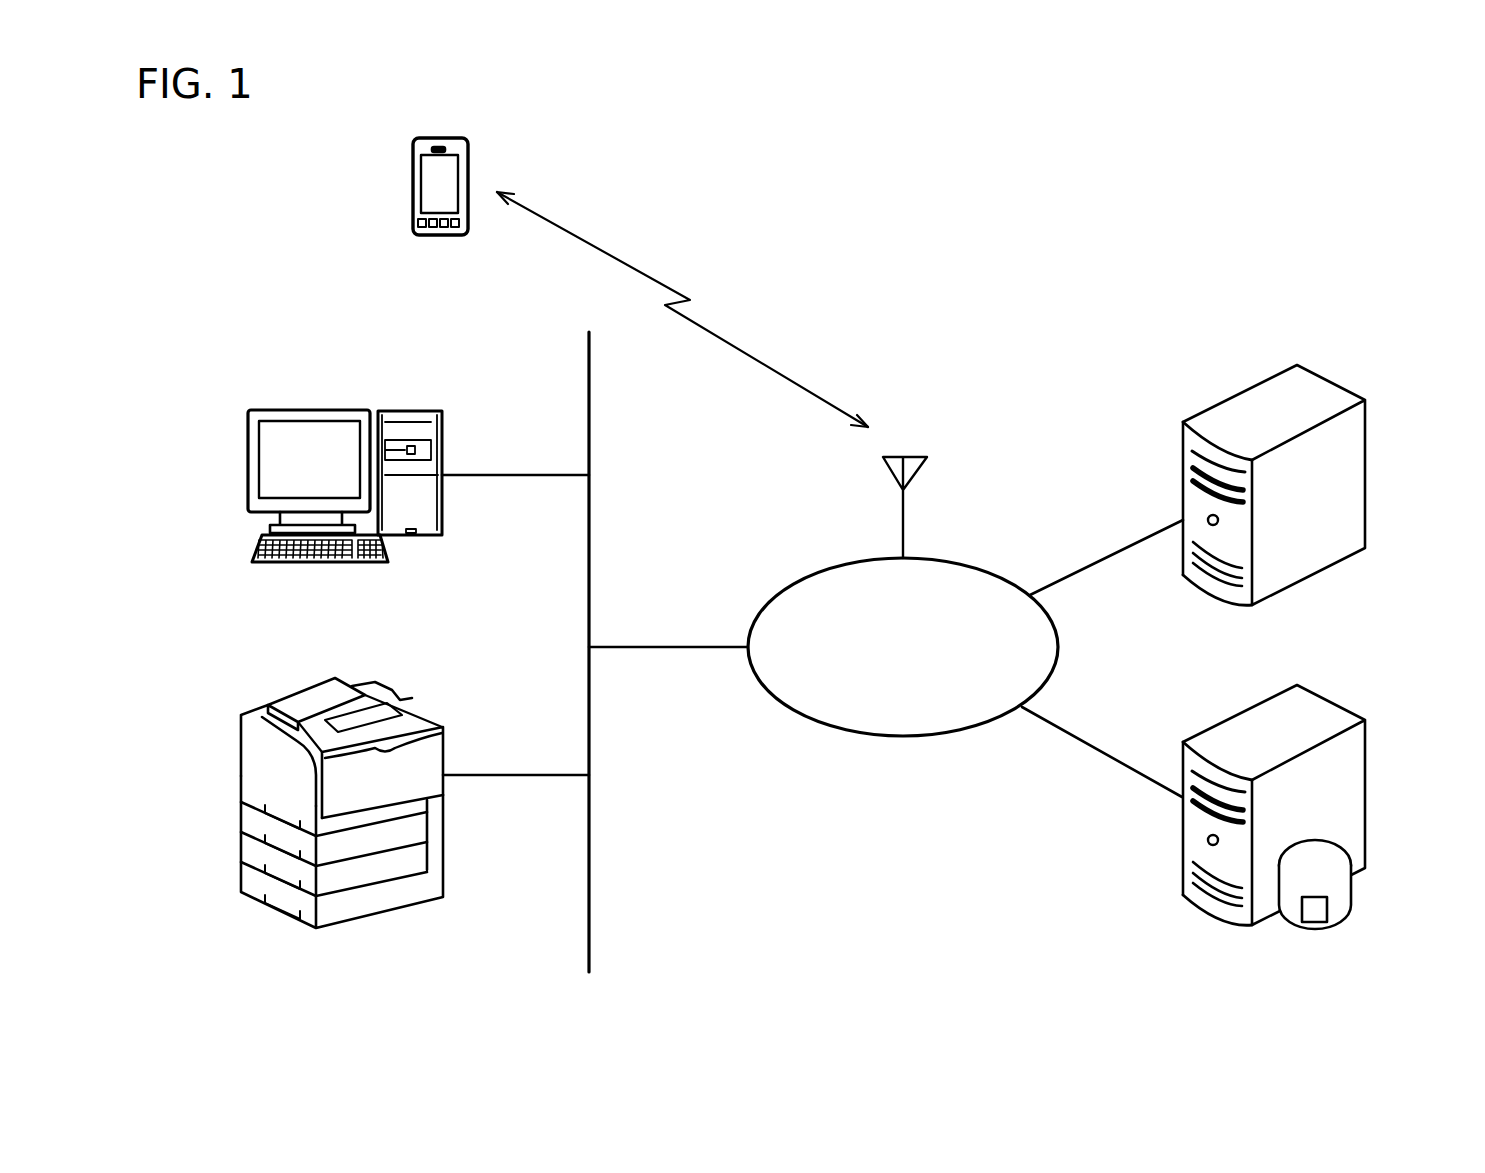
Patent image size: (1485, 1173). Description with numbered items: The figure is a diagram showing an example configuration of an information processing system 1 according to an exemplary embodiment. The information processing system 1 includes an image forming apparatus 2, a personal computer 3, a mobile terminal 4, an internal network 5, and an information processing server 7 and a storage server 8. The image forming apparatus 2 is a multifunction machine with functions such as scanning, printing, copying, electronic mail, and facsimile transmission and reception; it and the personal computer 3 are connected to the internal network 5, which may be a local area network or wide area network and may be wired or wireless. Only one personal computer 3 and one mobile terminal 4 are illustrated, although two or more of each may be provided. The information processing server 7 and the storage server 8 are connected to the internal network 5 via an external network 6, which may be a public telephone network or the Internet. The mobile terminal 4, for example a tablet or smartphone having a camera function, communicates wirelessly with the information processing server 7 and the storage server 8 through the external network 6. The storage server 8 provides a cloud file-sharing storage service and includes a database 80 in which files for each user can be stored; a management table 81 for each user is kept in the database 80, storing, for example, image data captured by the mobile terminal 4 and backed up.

The information processing system 1 is at (1122, 276).
The image forming apparatus 2 is at (292, 688).
The personal computer 3 is at (290, 410).
The mobile terminal 4 is at (434, 137).
The internal network 5 is at (589, 913).
The external network 6 is at (978, 568).
The information processing server 7 is at (1333, 380).
The storage server 8 is at (1331, 701).
The database 80 is at (1355, 915).
The management table 81 is at (1315, 922).